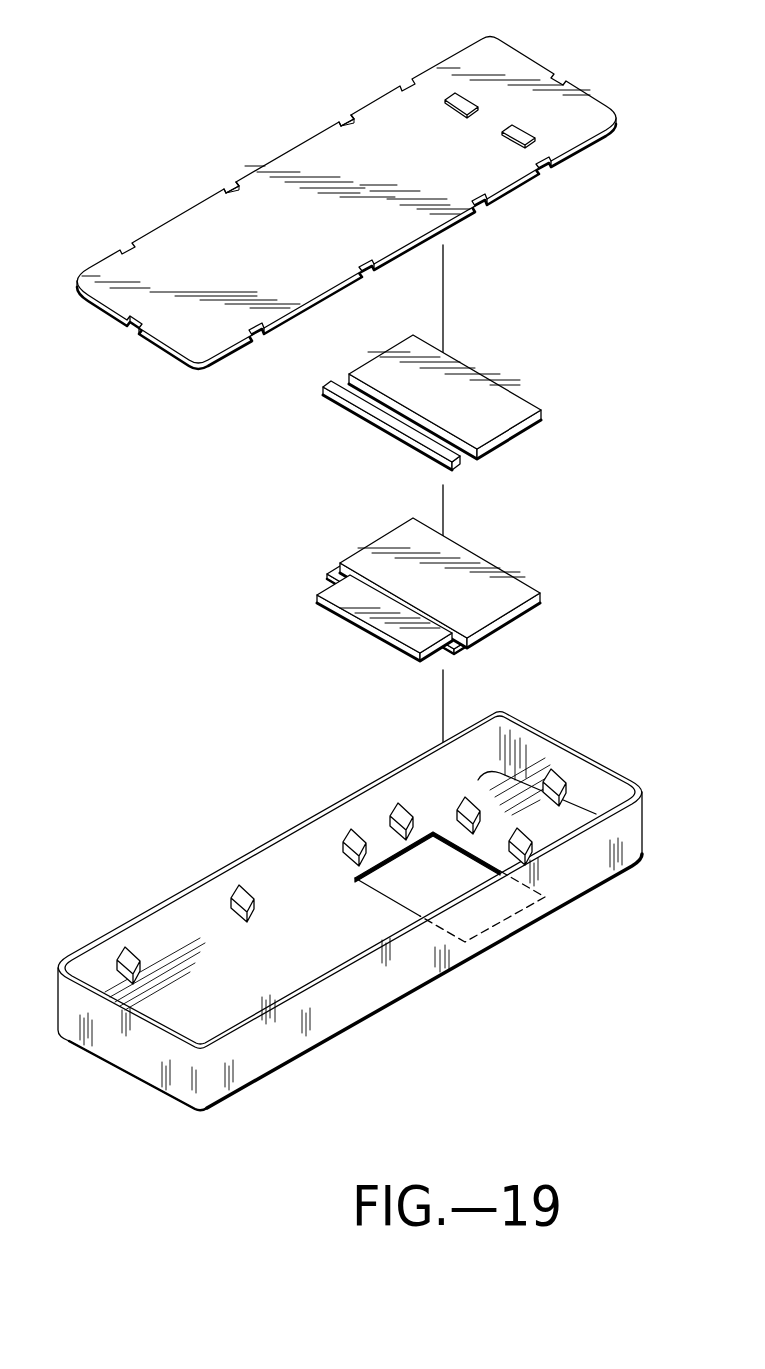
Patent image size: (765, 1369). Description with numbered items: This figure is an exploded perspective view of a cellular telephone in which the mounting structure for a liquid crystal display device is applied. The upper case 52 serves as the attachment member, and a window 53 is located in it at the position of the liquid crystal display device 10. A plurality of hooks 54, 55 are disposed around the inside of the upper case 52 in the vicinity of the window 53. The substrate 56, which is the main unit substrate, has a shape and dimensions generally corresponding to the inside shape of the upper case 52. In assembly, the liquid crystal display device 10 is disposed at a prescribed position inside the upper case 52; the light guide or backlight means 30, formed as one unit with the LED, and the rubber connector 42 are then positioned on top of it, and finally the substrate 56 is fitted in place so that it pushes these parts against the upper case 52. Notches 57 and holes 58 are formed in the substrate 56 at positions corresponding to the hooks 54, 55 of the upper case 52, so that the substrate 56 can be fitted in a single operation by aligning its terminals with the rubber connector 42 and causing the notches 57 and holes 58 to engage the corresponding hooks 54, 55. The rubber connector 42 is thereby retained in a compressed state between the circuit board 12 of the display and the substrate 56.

The liquid crystal display device 10 is at (503, 587).
The circuit board 12 is at (352, 600).
The backlight means 30 is at (480, 382).
The rubber connector 42 is at (365, 413).
The upper case 52 is at (147, 908).
The window 53 is at (410, 897).
The hooks 54 is at (250, 883).
The hooks 55 is at (477, 806).
The substrate 56 is at (603, 118).
The notches 57 is at (233, 187).
The holes 58 is at (466, 98).